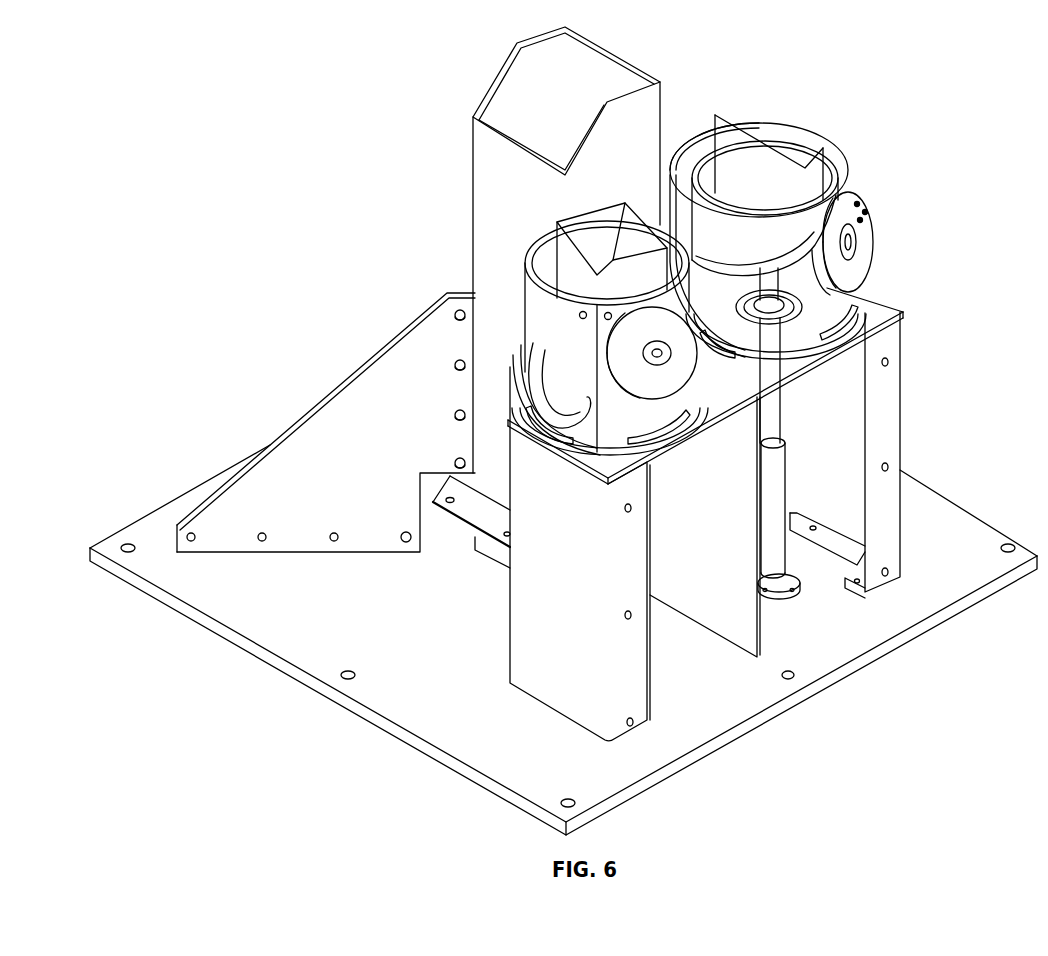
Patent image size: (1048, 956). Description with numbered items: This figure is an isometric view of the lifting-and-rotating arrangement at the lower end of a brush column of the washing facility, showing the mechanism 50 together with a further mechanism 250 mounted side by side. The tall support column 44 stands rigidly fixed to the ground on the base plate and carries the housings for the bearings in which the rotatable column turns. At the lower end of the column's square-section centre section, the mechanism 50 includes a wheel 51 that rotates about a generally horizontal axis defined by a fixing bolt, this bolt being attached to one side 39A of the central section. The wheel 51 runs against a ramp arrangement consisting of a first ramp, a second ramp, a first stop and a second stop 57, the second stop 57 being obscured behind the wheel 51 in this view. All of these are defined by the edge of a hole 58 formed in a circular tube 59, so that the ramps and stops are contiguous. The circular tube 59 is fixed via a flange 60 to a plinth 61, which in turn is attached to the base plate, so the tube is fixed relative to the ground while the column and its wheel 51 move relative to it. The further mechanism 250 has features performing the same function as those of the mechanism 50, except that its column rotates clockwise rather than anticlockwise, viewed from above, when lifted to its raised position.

The support column 44 is at (490, 170).
The further mechanism 250 is at (503, 268).
The mechanism 50 is at (845, 209).
The side of the central section 39A is at (808, 166).
The circular tube 59 is at (840, 145).
The hole 58 is at (867, 202).
The second stop 57 is at (867, 208).
The wheel 51 is at (883, 254).
The flange 60 is at (855, 288).
The plinth 61 is at (887, 307).